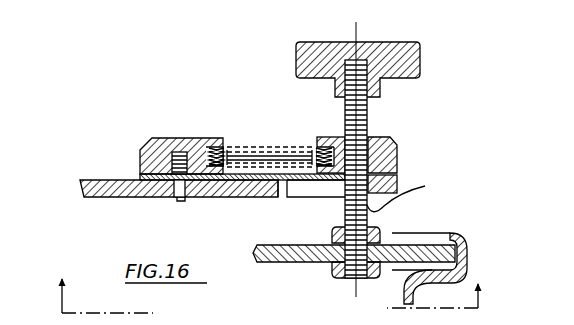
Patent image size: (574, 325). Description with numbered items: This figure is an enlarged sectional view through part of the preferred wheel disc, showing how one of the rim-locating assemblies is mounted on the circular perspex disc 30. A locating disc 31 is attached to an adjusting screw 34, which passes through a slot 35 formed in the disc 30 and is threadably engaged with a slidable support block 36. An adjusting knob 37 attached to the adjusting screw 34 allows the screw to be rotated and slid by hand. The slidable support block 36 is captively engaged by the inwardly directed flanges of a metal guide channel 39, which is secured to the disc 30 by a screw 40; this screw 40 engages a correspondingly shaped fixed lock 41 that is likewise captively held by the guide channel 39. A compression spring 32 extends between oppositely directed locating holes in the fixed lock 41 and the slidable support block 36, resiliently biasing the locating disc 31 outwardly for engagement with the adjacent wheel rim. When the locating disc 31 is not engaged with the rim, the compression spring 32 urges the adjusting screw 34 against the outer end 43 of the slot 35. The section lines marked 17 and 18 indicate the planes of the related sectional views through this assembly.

The section line 17- 17 is at (273, 284).
The section line 18- 18 is at (356, 22).
The circular perspex disc 30 is at (85, 198).
The locating disc 31 is at (279, 258).
The compression spring 32 is at (228, 142).
The adjusting screw 34 is at (371, 118).
The slot 35 is at (322, 190).
The slidable support block 36 is at (392, 142).
The adjusting knob 37 is at (386, 42).
The metal guide channel 39 is at (251, 149).
The screw 40 is at (182, 201).
The fixed lock 41 is at (163, 138).
The outer end of the slot 43 is at (408, 193).